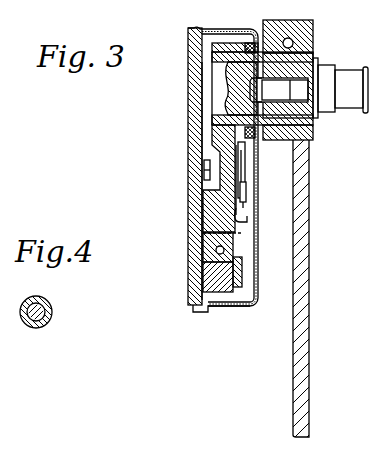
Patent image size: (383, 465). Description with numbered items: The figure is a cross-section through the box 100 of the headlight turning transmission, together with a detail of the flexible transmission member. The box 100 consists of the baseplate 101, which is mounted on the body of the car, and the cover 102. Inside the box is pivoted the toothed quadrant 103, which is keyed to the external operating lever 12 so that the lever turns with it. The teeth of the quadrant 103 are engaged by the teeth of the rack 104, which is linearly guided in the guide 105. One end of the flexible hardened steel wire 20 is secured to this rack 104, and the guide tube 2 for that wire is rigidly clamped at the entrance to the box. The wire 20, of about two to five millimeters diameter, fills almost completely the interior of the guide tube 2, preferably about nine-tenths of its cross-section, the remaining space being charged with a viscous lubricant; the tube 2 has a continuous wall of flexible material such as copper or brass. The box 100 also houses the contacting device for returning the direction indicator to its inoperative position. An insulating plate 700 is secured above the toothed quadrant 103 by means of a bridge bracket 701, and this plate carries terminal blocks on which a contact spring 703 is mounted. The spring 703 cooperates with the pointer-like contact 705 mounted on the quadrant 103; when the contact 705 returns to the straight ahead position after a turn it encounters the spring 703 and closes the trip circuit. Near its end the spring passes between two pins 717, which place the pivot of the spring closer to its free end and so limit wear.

In FIG. 3, the baseplate 101 is at (194, 66).
In FIG. 3, the cover 102 is at (228, 31).
In FIG. 3, the toothed quadrant 103 is at (201, 113).
In FIG. 3, the insulating plate 700 is at (222, 150).
In FIG. 3, the bridge bracket 701 is at (208, 176).
In FIG. 3, the rack 104 is at (204, 236).
In FIG. 3, the guide 105 is at (222, 275).
In FIG. 3, the external operating lever 12 is at (304, 160).
In FIG. 3, the contact spring 703 is at (247, 168).
In FIG. 3, the pins 717 is at (244, 190).
In FIG. 3, the pointer-like contact 705 is at (243, 216).
In FIG. 3, the box 100 is at (231, 306).
In FIG. 4, the guide tube 2 is at (47, 309).
In FIG. 4, the flexible hardened steel wire 20 is at (48, 321).